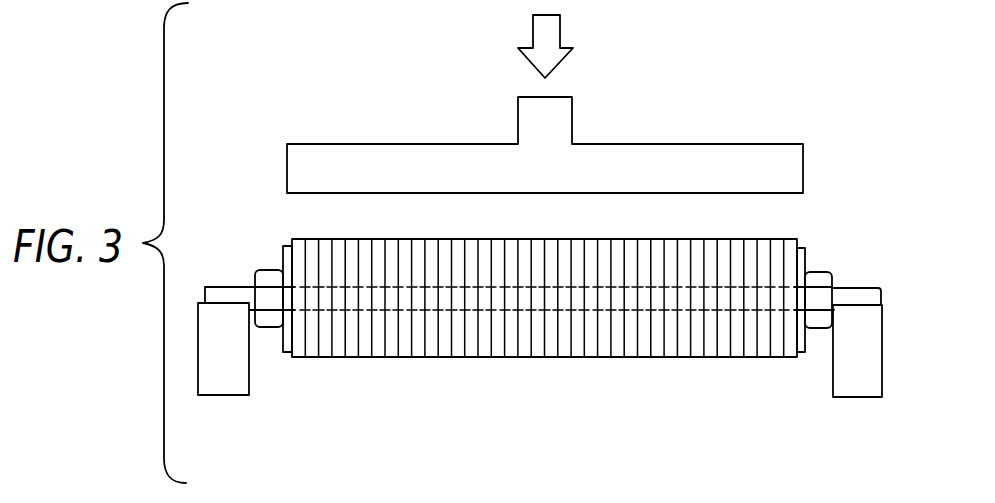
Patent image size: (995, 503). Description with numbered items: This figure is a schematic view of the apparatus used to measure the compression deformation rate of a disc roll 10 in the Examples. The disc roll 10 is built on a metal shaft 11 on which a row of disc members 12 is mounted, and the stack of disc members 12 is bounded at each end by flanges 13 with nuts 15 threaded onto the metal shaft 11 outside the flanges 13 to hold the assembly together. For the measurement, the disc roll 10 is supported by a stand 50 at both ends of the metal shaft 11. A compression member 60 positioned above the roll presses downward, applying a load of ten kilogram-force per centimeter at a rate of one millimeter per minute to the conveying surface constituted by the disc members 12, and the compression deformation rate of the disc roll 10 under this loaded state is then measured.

The disc roll 10 is at (804, 218).
The metal shaft 11 is at (862, 297).
The disc members 12 is at (555, 340).
The flanges 13 is at (287, 345).
The nuts 15 is at (273, 270).
The stand 50 is at (223, 380).
The compression member 60 is at (628, 165).